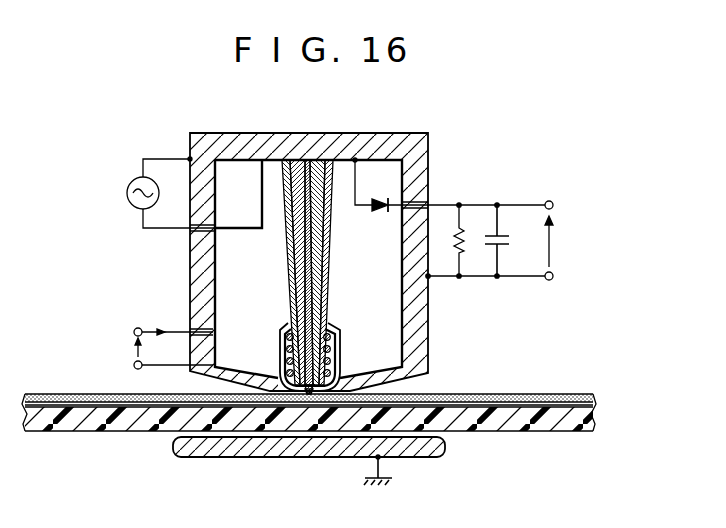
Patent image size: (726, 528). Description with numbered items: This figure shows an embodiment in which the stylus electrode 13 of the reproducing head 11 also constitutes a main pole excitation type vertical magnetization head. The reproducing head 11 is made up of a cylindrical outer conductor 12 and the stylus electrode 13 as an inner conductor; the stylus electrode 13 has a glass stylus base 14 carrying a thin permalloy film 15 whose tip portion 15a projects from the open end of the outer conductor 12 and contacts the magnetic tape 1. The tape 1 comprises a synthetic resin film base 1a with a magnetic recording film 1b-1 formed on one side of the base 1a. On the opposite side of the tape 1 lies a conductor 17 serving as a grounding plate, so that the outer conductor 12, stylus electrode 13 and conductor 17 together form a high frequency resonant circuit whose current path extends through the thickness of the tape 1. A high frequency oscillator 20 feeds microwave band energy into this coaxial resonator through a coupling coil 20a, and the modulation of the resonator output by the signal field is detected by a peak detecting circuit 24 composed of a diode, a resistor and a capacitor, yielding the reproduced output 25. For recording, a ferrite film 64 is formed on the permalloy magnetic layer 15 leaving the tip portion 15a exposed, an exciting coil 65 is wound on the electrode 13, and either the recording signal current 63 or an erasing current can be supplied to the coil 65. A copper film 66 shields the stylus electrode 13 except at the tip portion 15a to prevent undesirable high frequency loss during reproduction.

The magnetic tape 1 is at (332, 373).
The synthetic resin film base 1a is at (594, 418).
The magnetic recording film 1b-1 is at (587, 394).
The reproducing head 11 is at (261, 242).
The cylindrical outer conductor 12 is at (261, 133).
The stylus electrode 13 is at (310, 276).
The stylus base 14 is at (325, 263).
The permalloy film 15 is at (305, 254).
The tip portion 15a is at (293, 395).
The conductor 17 is at (305, 458).
The high frequency oscillator 20 is at (127, 193).
The coupling coil 20a is at (232, 228).
The peak detecting circuit 24 is at (477, 198).
The reproduced output 25 is at (551, 245).
The recording signal current 63 is at (134, 350).
The ferrite film 64 is at (297, 278).
The exciting coil 65 is at (337, 341).
The copper film 66 is at (328, 291).